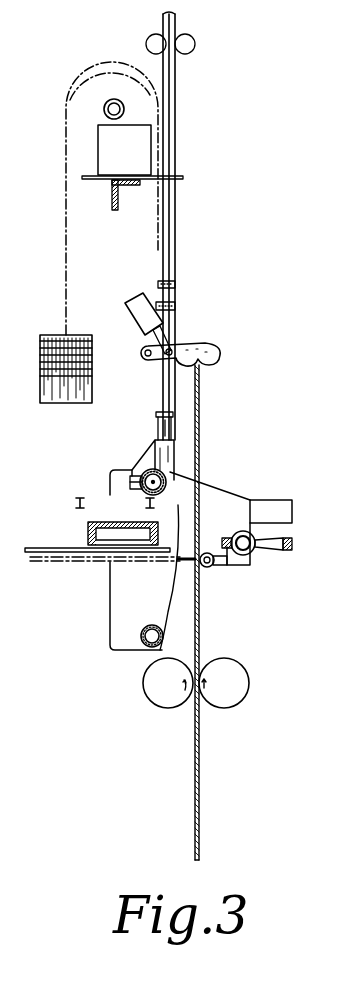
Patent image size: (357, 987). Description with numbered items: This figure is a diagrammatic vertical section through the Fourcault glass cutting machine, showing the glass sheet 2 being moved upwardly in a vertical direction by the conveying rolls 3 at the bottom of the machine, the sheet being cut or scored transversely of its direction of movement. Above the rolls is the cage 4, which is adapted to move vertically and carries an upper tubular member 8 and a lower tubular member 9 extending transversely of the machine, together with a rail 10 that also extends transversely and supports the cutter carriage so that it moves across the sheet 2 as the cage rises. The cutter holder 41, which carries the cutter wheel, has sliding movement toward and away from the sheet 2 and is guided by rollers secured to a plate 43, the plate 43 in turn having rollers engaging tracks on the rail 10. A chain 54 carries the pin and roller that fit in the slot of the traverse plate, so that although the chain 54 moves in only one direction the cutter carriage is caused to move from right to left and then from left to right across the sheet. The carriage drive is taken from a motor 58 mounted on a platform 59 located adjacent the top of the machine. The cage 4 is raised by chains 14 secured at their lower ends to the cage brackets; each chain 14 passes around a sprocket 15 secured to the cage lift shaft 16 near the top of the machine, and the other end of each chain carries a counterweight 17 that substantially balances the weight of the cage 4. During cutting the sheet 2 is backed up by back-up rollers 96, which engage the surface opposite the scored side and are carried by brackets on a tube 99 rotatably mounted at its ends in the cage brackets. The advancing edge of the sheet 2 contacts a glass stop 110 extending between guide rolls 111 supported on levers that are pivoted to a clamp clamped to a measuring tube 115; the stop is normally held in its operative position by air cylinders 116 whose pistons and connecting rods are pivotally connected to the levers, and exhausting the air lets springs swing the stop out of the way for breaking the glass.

The glass sheet 2 is at (200, 466).
The conveying rolls 3 is at (150, 692).
The cage 4 is at (113, 590).
The upper tubular member 8 is at (160, 492).
The lower tubular member 9 is at (145, 642).
The rail 10 is at (125, 522).
The chains 14 is at (66, 145).
The sprocket 15 is at (88, 76).
The cage lift shaft 16 is at (104, 107).
The counterweight 17 is at (93, 391).
The cutter holder 41 is at (46, 560).
The plate 43 is at (36, 547).
The chain 54 is at (75, 505).
The motor 58 is at (100, 142).
The platform 59 is at (113, 192).
The back-up rollers 96 is at (210, 568).
The tube 99 is at (252, 550).
The glass stop 110 is at (200, 372).
The guide rolls 111 is at (220, 352).
The measuring tube 115 is at (170, 248).
The air cylinders 116 is at (130, 302).